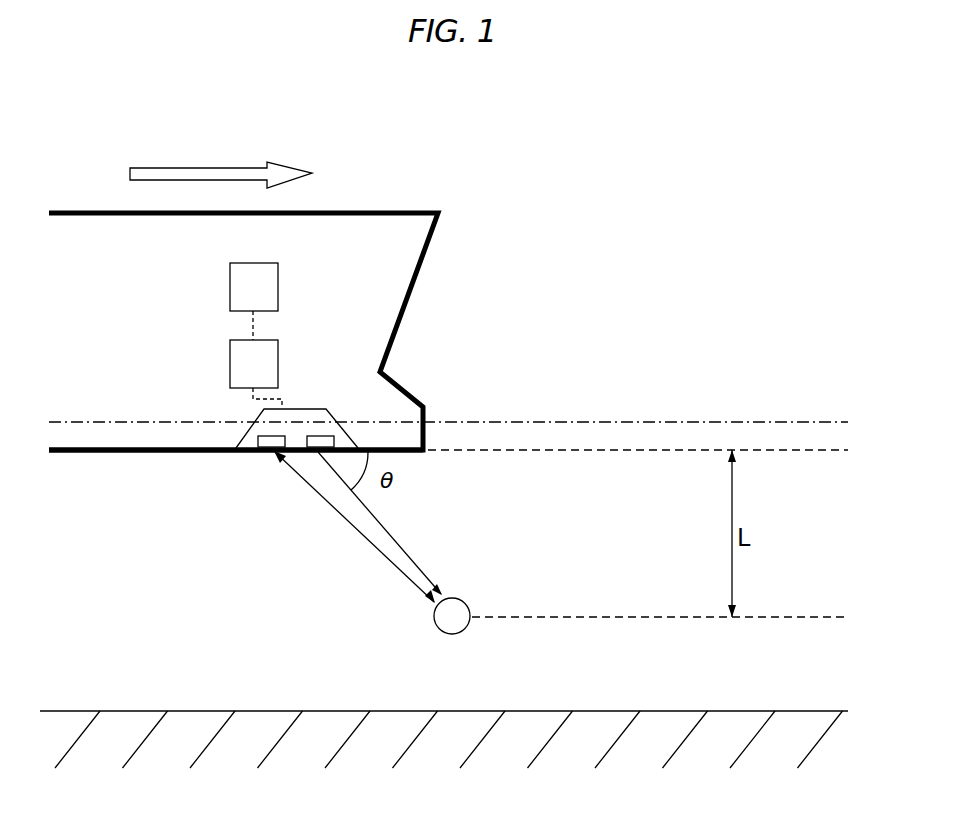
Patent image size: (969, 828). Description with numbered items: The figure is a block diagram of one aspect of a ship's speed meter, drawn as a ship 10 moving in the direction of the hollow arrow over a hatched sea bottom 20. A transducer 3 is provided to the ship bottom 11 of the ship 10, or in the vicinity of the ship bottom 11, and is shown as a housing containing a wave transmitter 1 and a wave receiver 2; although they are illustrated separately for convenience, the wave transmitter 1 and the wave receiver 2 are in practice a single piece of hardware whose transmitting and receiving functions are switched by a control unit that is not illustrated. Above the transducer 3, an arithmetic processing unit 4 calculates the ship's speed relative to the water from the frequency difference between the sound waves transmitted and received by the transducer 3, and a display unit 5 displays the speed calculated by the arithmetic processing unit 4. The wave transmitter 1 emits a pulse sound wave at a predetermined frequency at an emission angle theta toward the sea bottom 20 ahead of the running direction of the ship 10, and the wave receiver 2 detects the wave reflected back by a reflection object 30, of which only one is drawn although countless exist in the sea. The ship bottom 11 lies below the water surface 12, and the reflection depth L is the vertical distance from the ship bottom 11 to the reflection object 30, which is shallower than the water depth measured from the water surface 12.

The wave transmitter 1 is at (320, 436).
The wave receiver 2 is at (275, 436).
The transducer 3 is at (324, 404).
The arithmetic processing unit 4 is at (230, 370).
The display unit 5 is at (278, 283).
The ship 10 is at (373, 210).
The ship bottom 11 is at (137, 452).
The water surface 12 is at (732, 421).
The sea bottom 20 is at (218, 711).
The reflection object 30 is at (437, 622).